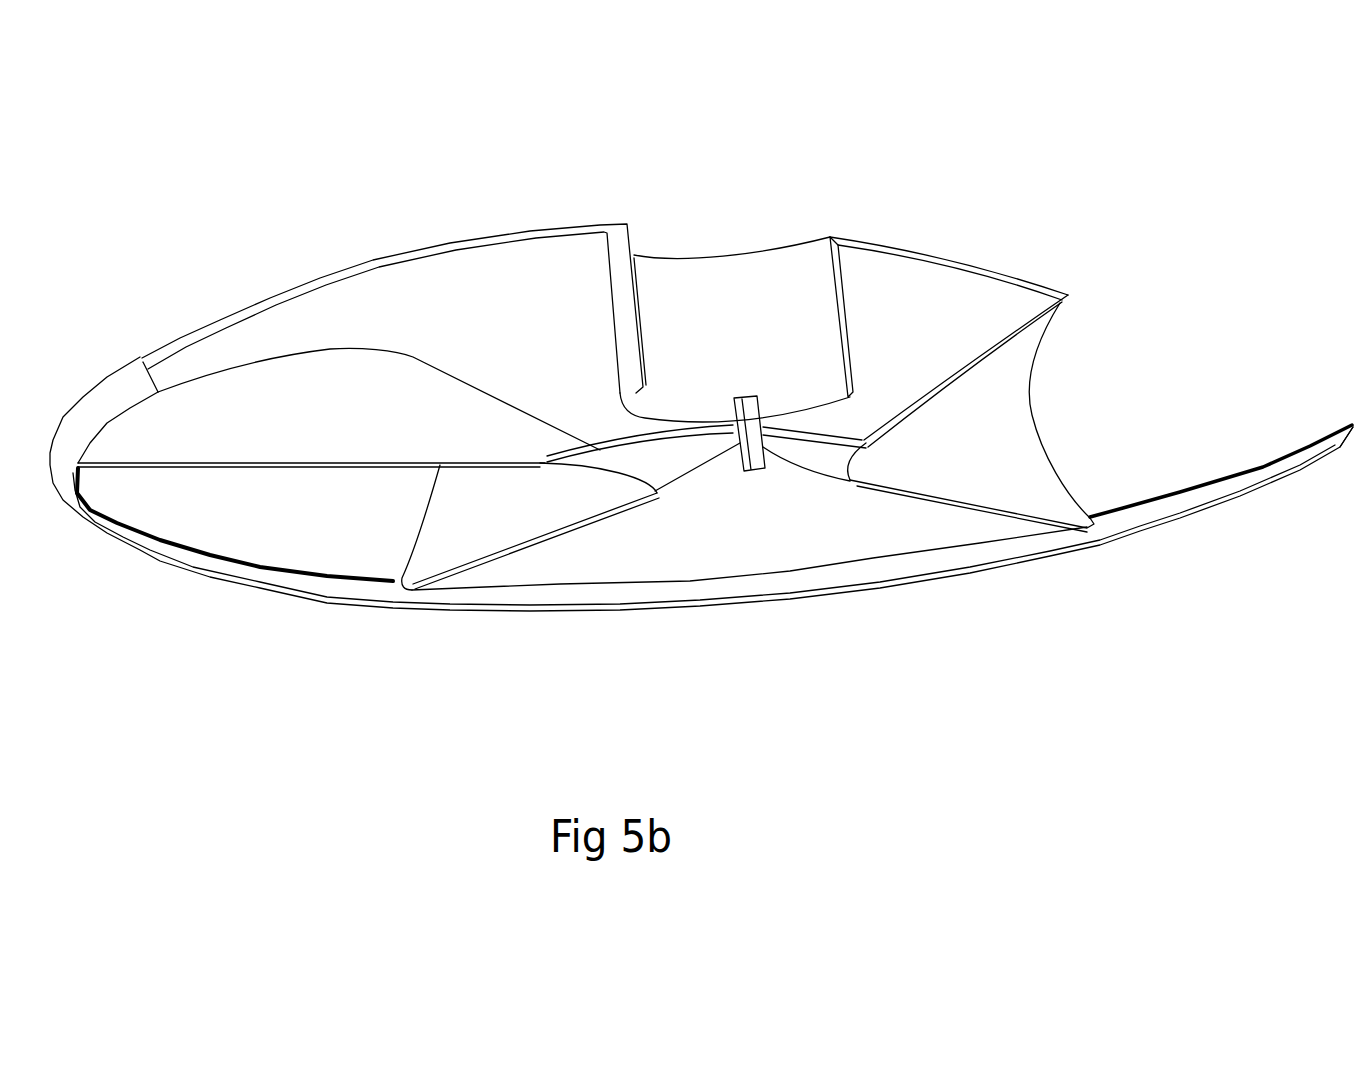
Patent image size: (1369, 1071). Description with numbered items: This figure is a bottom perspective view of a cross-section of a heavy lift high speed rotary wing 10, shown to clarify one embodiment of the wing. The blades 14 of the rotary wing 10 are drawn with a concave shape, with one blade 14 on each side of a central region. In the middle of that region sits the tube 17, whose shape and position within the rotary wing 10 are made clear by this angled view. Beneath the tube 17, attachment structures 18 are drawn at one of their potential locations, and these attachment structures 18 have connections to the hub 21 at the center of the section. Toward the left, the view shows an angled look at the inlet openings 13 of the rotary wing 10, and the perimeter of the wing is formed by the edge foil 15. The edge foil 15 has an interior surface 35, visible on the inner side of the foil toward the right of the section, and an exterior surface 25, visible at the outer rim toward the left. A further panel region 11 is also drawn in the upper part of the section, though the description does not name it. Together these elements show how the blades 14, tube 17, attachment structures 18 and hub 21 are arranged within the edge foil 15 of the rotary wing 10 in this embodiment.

The heavy lift high speed rotary wing 10 is at (1088, 150).
The upper panel 11 is at (520, 329).
The inlet openings 13 is at (270, 550).
The blades 14 is at (527, 507).
The edge foil 15 is at (809, 612).
The tube 17 is at (755, 355).
The attachment structures 18 is at (684, 471).
The hub 21 is at (732, 490).
The exterior surface 25 is at (139, 381).
The interior surface 35 is at (1121, 516).